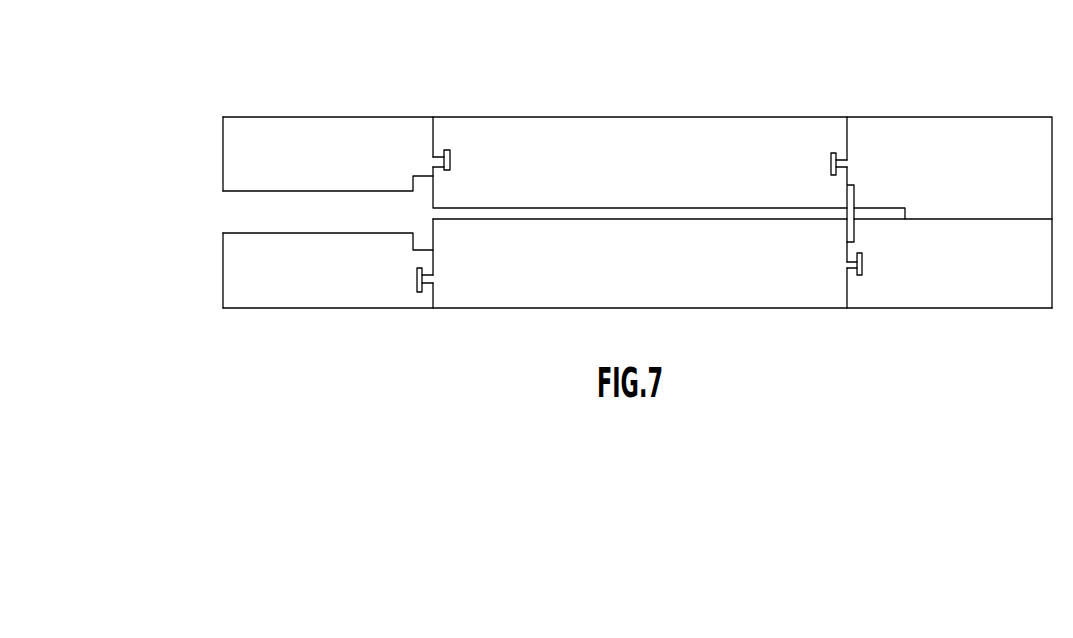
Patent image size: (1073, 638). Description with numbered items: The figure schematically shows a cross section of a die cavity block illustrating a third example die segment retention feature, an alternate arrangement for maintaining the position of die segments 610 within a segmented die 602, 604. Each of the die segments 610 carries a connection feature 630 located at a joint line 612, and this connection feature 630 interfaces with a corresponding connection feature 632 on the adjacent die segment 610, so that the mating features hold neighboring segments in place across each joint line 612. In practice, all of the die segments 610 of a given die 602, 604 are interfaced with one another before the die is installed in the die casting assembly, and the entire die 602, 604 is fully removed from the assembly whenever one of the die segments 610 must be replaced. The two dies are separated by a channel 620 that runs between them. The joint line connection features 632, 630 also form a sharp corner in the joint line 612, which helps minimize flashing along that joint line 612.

The segmented die 602 is at (250, 116).
The segmented die 604 is at (262, 308).
The die segment 610 is at (340, 179).
The joint line 612 is at (438, 136).
The channel between panels 620 is at (232, 212).
The connection feature 630 is at (450, 158).
The connection feature 632 is at (433, 160).